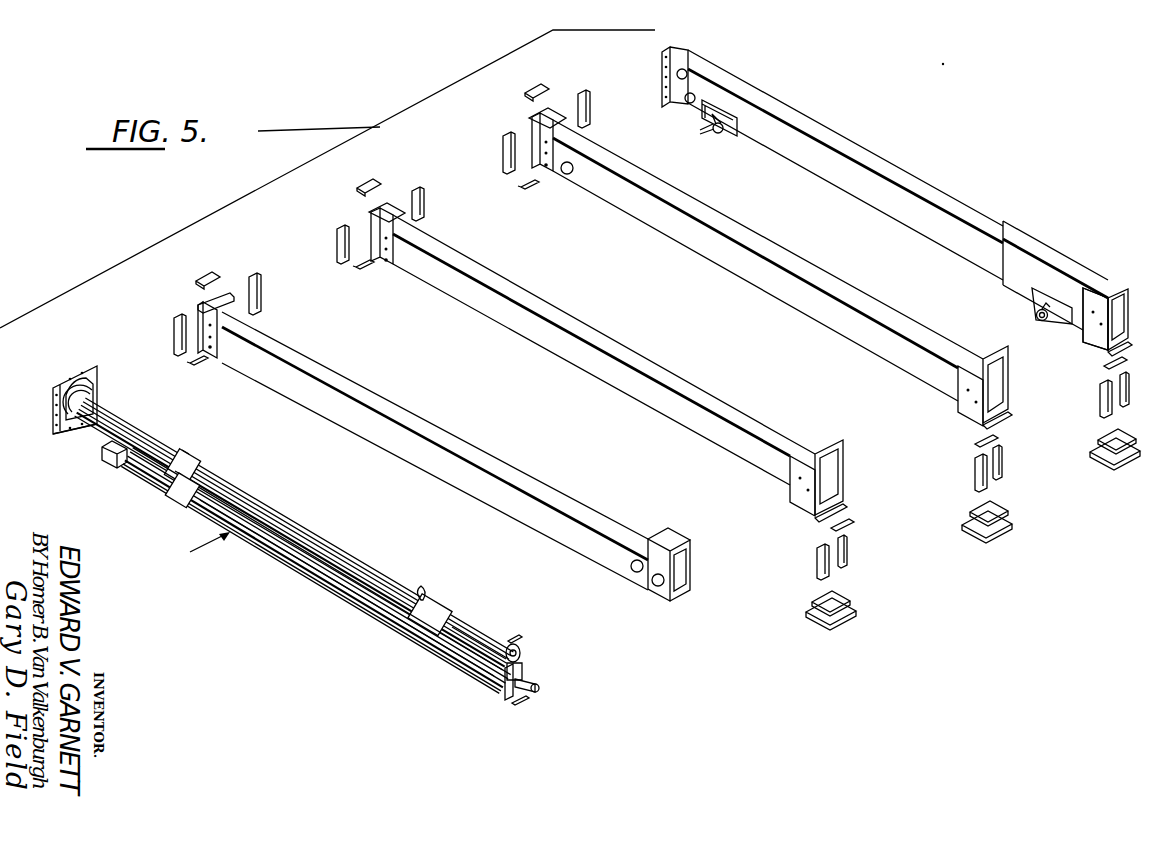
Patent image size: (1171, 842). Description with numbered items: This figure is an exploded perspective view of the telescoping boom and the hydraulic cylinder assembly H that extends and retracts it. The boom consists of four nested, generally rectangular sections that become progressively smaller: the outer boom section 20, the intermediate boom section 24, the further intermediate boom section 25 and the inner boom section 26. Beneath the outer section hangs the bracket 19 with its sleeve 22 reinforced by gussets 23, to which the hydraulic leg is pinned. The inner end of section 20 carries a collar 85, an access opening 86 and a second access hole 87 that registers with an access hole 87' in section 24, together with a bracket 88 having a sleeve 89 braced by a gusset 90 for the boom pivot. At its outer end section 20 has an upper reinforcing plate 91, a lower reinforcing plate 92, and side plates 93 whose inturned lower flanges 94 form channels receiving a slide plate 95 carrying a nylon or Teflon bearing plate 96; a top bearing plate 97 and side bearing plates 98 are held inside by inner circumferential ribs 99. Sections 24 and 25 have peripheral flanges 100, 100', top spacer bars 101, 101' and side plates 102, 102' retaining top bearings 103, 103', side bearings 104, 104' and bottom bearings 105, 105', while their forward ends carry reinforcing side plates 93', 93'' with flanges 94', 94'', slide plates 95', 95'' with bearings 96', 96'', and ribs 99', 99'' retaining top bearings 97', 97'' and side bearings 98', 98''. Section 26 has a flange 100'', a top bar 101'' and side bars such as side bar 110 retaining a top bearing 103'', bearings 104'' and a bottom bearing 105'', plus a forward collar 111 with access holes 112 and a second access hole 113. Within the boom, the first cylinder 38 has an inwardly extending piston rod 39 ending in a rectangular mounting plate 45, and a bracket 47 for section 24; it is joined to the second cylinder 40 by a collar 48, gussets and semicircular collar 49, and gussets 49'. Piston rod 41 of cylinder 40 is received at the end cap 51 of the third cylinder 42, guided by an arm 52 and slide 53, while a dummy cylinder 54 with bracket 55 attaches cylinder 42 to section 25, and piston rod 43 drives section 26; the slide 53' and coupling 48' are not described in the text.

The bracket 19 is at (1062, 314).
The outer boom section 20 is at (881, 165).
The sleeve 22 is at (1037, 320).
The gussets 23 is at (1043, 297).
The intermediate boom section 24 is at (822, 280).
The intermediate boom section 25 is at (708, 401).
The inner boom section 26 is at (416, 418).
The first cylinder 38 is at (264, 501).
The piston rod 39 is at (82, 384).
The second cylinder 40 is at (463, 632).
The piston rod 41 is at (523, 665).
The third cylinder 42 is at (305, 574).
The piston rod 43 is at (540, 688).
The rectangular mounting plate 45 is at (70, 373).
The bracket 47 is at (66, 433).
The collar 48 is at (186, 450).
The coupling 48' is at (454, 613).
The gussets / semicircular collar 49 is at (175, 500).
The gussets 49' is at (424, 575).
The end cap 51 is at (505, 684).
The arm 52 is at (521, 650).
The slide 53 is at (524, 619).
The cotter pin 53' is at (524, 715).
The dummy or extension cylinder 54 is at (150, 466).
The bracket 55 is at (104, 464).
The collar 85 is at (683, 47).
The access opening 86 is at (688, 74).
The access hole 87 is at (669, 108).
The access hole 87' is at (583, 194).
The bracket 88 is at (737, 128).
The sleeve 89 is at (720, 133).
The gusset 90 is at (700, 132).
The upper reinforcing plate 91 is at (1097, 288).
The lower reinforcing plate 92 is at (1007, 287).
The side plates 93 is at (1106, 329).
The reinforcing side plates 93' is at (972, 386).
The reinforcing side plates 93'' is at (813, 475).
The inturned lower flanges 94 is at (1113, 357).
The inturned flanges 94' is at (1014, 418).
The inturned flanges 94'' is at (836, 517).
The slide plate 95 is at (1115, 465).
The slide plate 95' is at (998, 535).
The slide plate 95'' is at (843, 626).
The bearing plate 96 is at (1123, 433).
The bearing 96' is at (1011, 508).
The bearing 96'' is at (813, 613).
The top bearing plate 97 is at (1133, 356).
The top bearing 97' is at (959, 437).
The top bearing 97'' is at (868, 528).
The side bearing plates 98 is at (1114, 398).
The side bearings 98' is at (993, 472).
The side bearings 98'' is at (833, 557).
The inner circumferential ribs 99 is at (1132, 309).
The peripheral rib 99' is at (1015, 384).
The peripheral rib 99'' is at (854, 477).
The peripheral flange 100 is at (557, 130).
The peripheral flange 100' is at (349, 225).
The peripheral flange 100'' is at (173, 318).
The transverse top spacer bar 101 is at (584, 124).
The transverse top spacer bar 101' is at (424, 218).
The top bar 101'' is at (259, 307).
The side plate 102 is at (559, 186).
The side plate 102' is at (403, 284).
The top bearing 103 is at (524, 80).
The top bearing 103' is at (371, 169).
The top bearing 103'' is at (196, 265).
The side bearings 104 is at (542, 116).
The side bearings 104' is at (373, 211).
The bearings 104'' is at (222, 311).
The bottom bearing 105 is at (507, 194).
The bottom bearing 105' is at (350, 278).
The bottom bearing 105'' is at (183, 373).
The side bar 110 is at (214, 352).
The collar 111 is at (666, 540).
The access hole 112 is at (661, 601).
The access hole 113 is at (630, 573).
The hydraulic cylinder assembly H is at (200, 548).